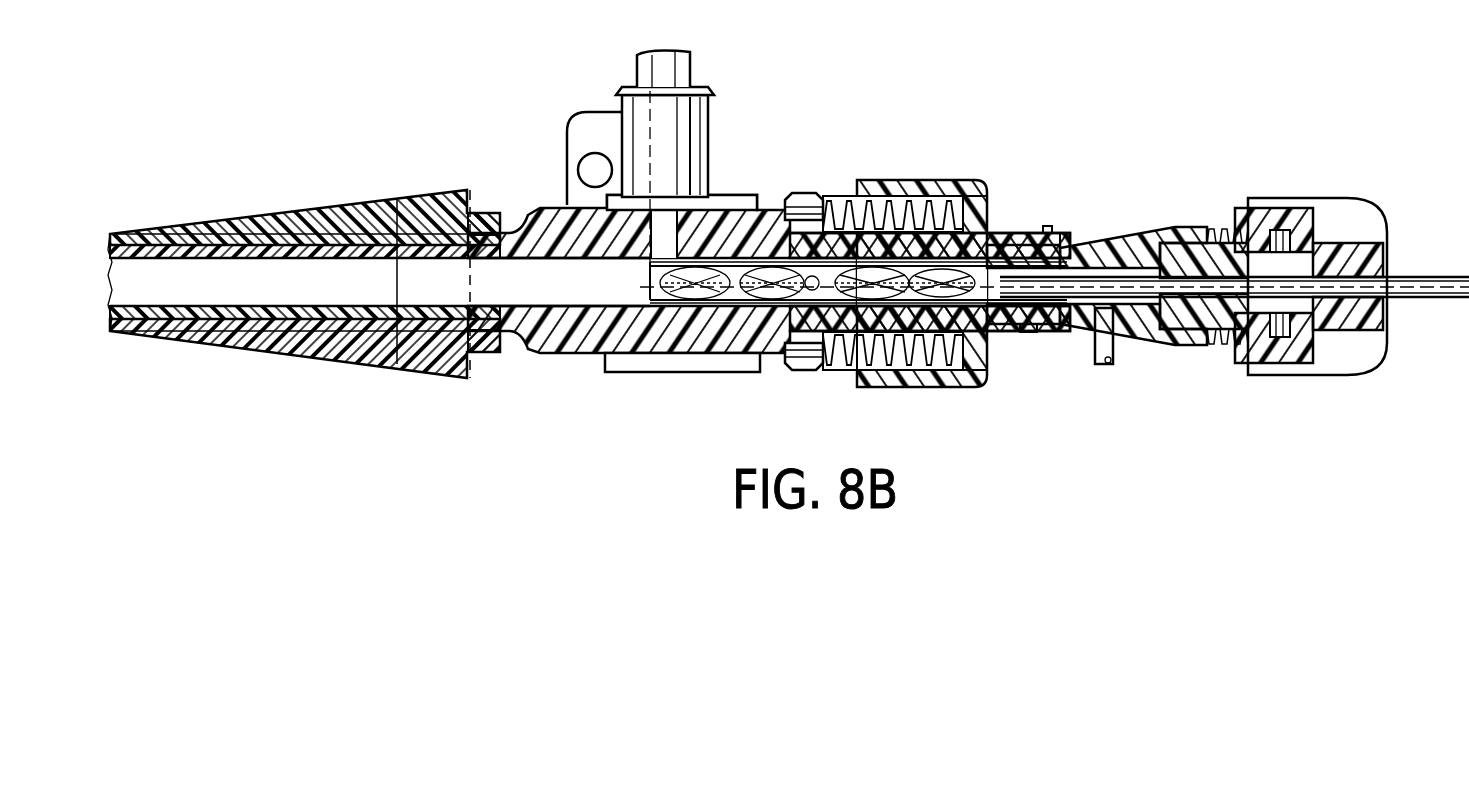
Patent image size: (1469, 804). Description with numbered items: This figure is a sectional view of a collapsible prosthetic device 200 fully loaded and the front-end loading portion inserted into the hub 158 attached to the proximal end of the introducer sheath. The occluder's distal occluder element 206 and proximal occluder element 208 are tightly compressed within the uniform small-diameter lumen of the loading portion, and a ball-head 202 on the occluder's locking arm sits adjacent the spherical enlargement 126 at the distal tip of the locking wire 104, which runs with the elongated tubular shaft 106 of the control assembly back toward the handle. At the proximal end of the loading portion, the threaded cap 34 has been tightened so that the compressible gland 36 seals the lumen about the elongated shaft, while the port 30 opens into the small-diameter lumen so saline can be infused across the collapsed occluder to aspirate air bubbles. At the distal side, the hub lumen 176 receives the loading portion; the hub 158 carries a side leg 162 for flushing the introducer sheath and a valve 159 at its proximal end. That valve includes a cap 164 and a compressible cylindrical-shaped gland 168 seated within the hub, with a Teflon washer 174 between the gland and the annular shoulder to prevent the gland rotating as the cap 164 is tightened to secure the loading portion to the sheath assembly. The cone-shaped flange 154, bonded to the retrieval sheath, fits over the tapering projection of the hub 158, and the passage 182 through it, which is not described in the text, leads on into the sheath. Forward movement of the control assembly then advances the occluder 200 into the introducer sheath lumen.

The cone-shaped flange 154 is at (380, 192).
The nose bore 182 is at (290, 298).
The hub lumen 176 is at (592, 298).
The hub 158 is at (720, 190).
The side leg 162 is at (696, 50).
The distal occluder element 206 is at (655, 285).
The prosthetic device 200 is at (760, 305).
The valve 159 is at (846, 374).
The compressible cylindrical-shaped gland 168 is at (825, 240).
The Teflon washer 174 is at (845, 235).
The spherical enlargement 126 is at (947, 173).
The cap 164 is at (972, 180).
The ball-head 202 is at (890, 386).
The proximal occluder element 208 is at (987, 300).
The port 30 is at (1114, 350).
The compressible gland 36 is at (1175, 252).
The threaded cap 34 is at (1268, 200).
The elongated tubular shaft 106 is at (1425, 277).
The locking wire 104 is at (1462, 299).